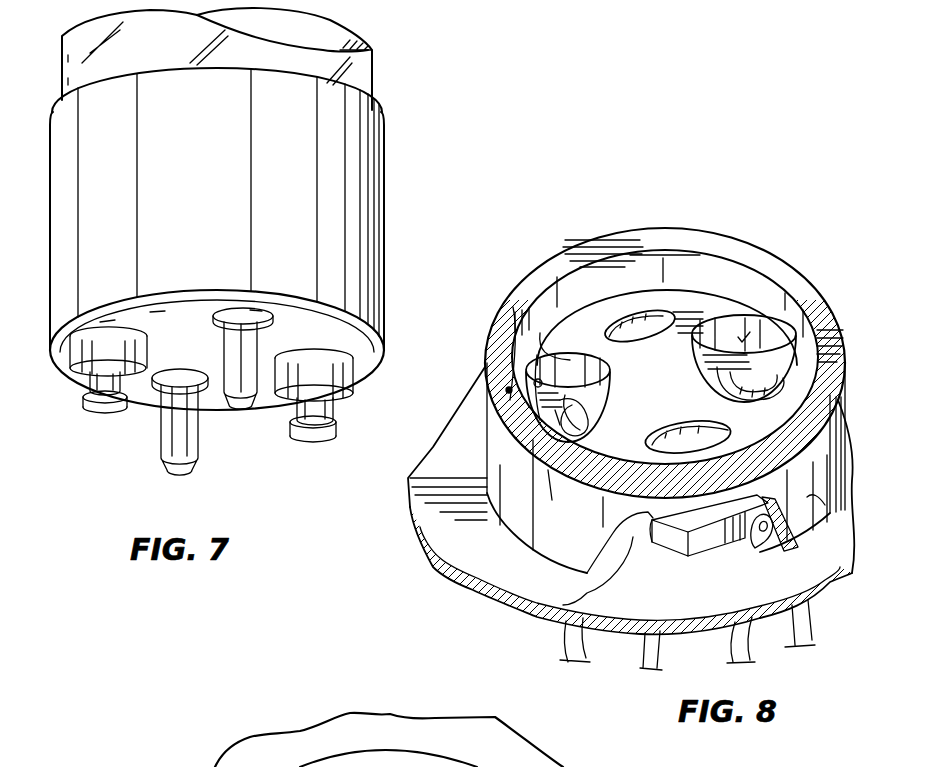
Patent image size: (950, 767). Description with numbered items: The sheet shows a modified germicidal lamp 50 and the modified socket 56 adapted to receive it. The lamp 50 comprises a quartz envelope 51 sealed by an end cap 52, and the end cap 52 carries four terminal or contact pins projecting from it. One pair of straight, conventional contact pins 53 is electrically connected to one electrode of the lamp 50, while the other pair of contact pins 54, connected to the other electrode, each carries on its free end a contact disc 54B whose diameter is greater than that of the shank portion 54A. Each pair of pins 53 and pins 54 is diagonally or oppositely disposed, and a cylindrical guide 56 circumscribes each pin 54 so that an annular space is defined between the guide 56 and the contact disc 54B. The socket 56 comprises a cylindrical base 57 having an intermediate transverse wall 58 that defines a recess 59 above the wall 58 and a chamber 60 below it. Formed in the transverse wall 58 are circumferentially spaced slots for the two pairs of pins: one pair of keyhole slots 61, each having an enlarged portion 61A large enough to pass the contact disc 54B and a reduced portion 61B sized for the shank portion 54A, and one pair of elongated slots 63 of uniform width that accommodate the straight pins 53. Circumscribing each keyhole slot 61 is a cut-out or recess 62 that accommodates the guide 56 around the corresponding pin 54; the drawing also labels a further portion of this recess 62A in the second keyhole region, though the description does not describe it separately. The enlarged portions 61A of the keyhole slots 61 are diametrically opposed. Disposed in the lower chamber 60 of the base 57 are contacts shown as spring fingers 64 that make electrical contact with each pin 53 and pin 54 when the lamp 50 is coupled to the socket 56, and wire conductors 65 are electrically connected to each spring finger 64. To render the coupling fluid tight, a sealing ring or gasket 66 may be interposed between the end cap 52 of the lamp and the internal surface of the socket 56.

In FIG. 7, the germicidal lamp 50 is at (250, 209).
In FIG. 7, the quartz envelope 51 is at (360, 34).
In FIG. 7, the end cap 52 is at (355, 202).
In FIG. 7, the contact pin 53 is at (253, 357).
In FIG. 7, the contact pin 54 is at (123, 397).
In FIG. 7, the shank portion 54A is at (83, 403).
In FIG. 7, the contact disc 54B is at (118, 415).
In FIG. 7, the cylindrical guide 56 is at (112, 340).
In FIG. 8, the cylindrical guide 56 is at (768, 248).
In FIG. 8, the cylindrical base 57 is at (820, 500).
In FIG. 8, the transverse wall 58 is at (693, 308).
In FIG. 8, the recess 59 is at (630, 272).
In FIG. 8, the chamber 60 is at (563, 605).
In FIG. 8, the keyhole slot 61 is at (598, 435).
In FIG. 8, the enlarged portion 61A is at (547, 470).
In FIG. 8, the reduced portion 61B is at (540, 333).
In FIG. 8, the recess 62 is at (597, 372).
In FIG. 8, the contact channel 62A is at (762, 388).
In FIG. 8, the elongated slot 63 is at (605, 318).
In FIG. 8, the spring finger 64 is at (697, 545).
In FIG. 8, the wire conductor 65 is at (758, 548).
In FIG. 8, the sealing ring 66 is at (513, 307).